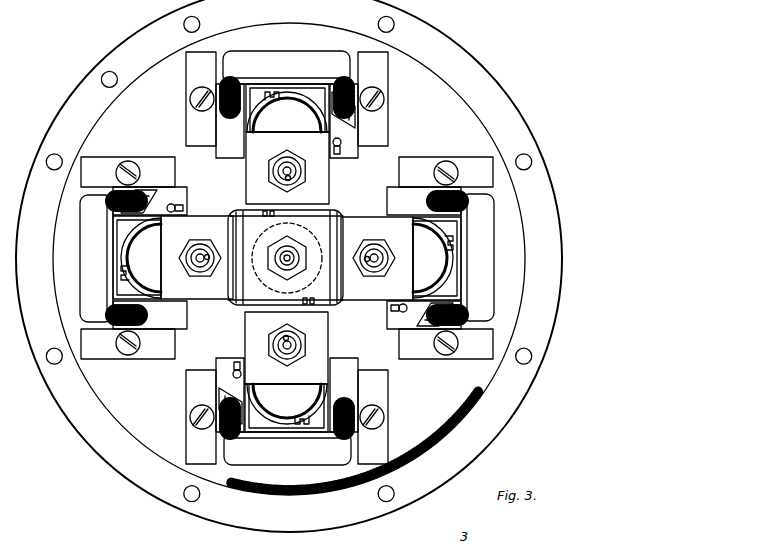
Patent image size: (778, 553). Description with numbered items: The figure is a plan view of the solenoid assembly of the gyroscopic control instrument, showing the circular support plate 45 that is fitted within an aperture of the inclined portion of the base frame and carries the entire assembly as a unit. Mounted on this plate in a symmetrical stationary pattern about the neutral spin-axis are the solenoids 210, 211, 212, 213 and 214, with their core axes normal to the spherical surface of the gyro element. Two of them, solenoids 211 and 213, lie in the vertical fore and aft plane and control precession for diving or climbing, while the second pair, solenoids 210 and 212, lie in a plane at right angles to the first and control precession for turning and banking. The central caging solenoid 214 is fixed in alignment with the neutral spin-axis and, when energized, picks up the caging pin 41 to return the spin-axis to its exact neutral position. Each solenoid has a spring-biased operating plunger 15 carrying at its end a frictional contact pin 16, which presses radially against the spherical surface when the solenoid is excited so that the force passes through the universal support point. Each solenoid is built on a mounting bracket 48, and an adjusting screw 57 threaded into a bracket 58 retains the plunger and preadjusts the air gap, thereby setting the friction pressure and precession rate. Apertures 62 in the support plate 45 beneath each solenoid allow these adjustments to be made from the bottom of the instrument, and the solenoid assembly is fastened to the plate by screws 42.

The circular support plate 45 is at (491, 88).
The clamping screws 42 is at (192, 104).
The apertures 62 is at (275, 53).
The solenoid 210 is at (133, 248).
The solenoid 211 is at (300, 100).
The solenoid 212 is at (440, 253).
The solenoid 213 is at (278, 415).
The caging solenoid 214 is at (247, 302).
The operating plunger 15 is at (274, 172).
The frictional contact pin 16 is at (292, 179).
The adjusting screw 57 is at (344, 128).
The bracket 58 is at (357, 129).
The mounting bracket 48 is at (287, 215).
The caging pin 41 is at (300, 265).